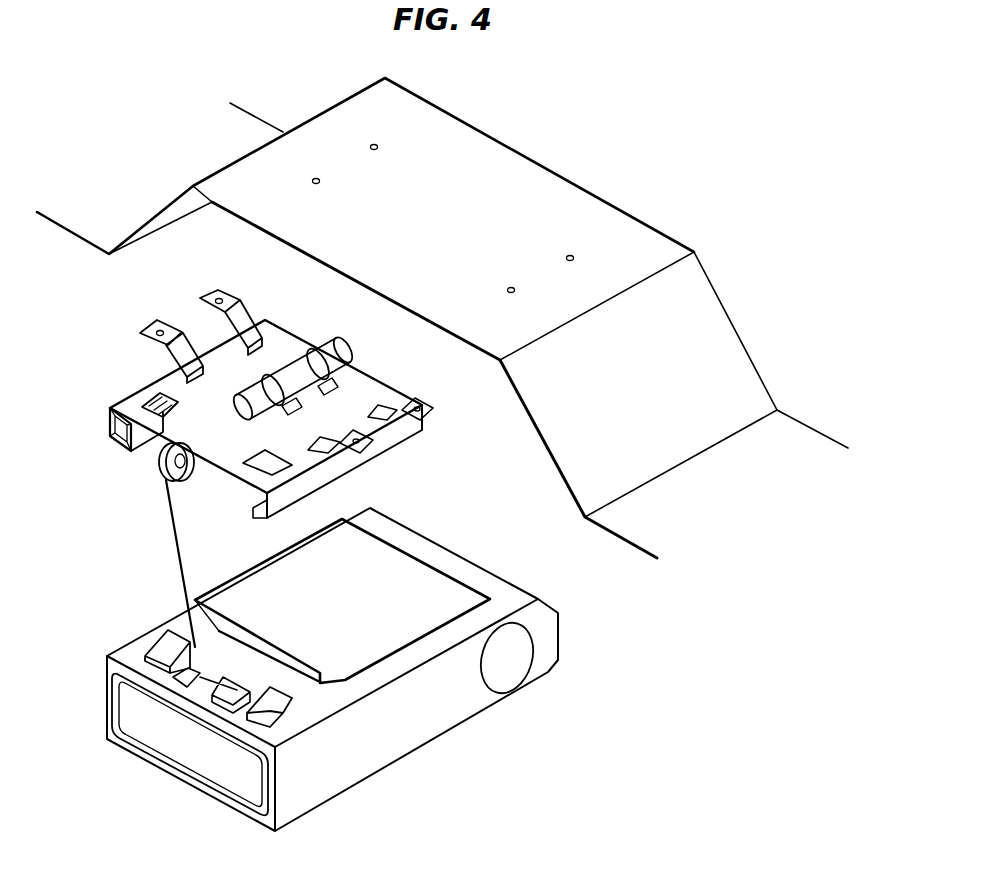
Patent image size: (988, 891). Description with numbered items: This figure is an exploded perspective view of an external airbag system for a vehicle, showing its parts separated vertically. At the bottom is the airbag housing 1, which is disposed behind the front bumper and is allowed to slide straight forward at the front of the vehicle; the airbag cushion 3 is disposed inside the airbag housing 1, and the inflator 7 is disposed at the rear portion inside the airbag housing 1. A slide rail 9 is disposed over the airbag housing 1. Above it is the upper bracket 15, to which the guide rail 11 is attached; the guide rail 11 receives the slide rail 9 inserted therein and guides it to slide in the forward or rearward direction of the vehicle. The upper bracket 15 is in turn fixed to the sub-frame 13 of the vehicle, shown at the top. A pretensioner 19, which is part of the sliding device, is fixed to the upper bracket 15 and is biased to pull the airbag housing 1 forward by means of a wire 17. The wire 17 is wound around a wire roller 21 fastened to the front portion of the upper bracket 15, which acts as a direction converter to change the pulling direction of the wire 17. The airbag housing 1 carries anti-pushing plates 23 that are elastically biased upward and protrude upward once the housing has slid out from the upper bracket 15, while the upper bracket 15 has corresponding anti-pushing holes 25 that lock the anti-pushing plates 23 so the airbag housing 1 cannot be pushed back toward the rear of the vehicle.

The airbag housing 1 is at (344, 682).
The airbag cushion 3 is at (163, 752).
The inflator 7 is at (510, 660).
The slide rail 9 is at (413, 570).
The guide rail 11 is at (235, 404).
The sub-frame 13 is at (527, 175).
The upper bracket 15 is at (118, 400).
The wire 17 is at (165, 513).
The pretensioner 19 is at (352, 352).
The wire roller 21 is at (190, 478).
The anti-pushing plates 23 is at (165, 642).
The anti-pushing holes 25 is at (262, 460).